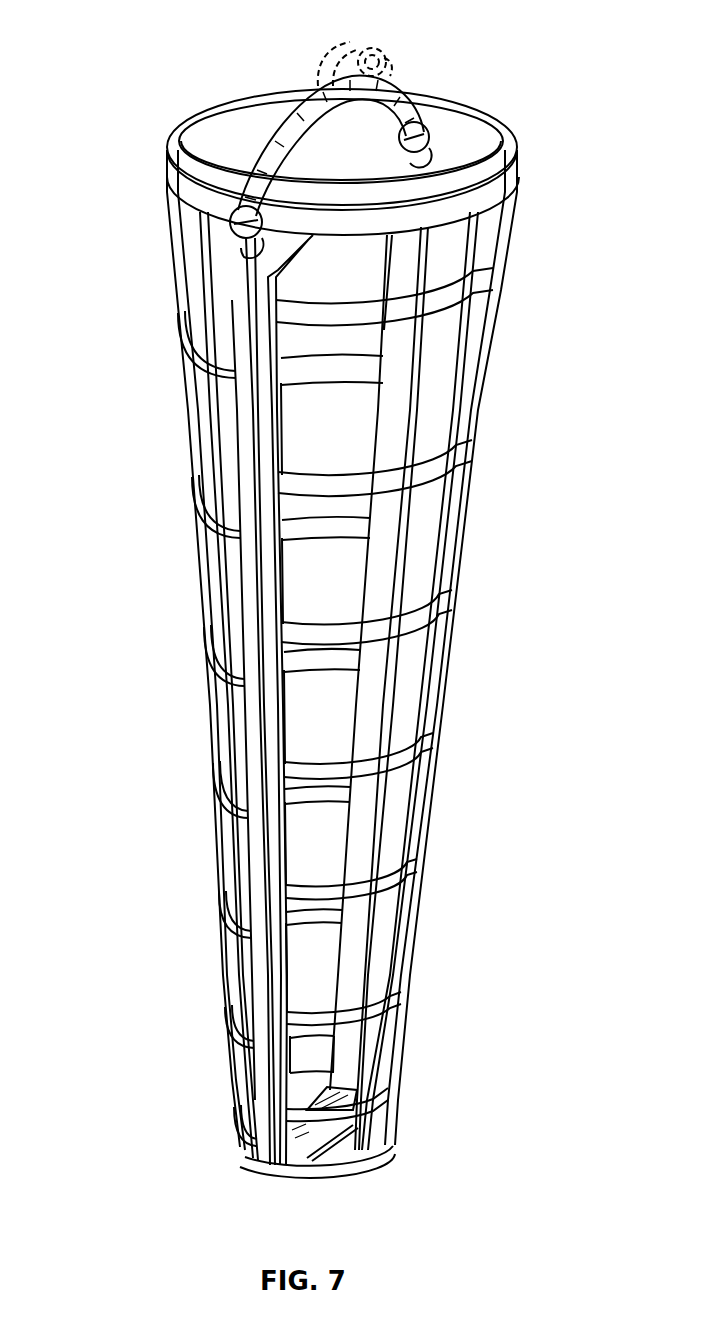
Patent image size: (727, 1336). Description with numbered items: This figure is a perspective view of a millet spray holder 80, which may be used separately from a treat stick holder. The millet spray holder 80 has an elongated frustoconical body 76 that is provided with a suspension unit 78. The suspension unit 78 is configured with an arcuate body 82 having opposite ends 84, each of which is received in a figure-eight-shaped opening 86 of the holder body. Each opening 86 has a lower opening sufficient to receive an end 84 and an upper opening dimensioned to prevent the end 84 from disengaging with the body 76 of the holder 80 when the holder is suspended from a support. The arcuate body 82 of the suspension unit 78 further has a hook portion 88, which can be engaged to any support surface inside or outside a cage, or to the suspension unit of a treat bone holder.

The elongated frustoconical body 76 is at (448, 613).
The suspension unit 78 is at (268, 125).
The millet spray holder 80 is at (184, 841).
The arcuate body 82 is at (320, 197).
The opposite ends 84 is at (240, 225).
The 8-shaped opening 86 is at (418, 140).
The hook portion 88 is at (347, 38).